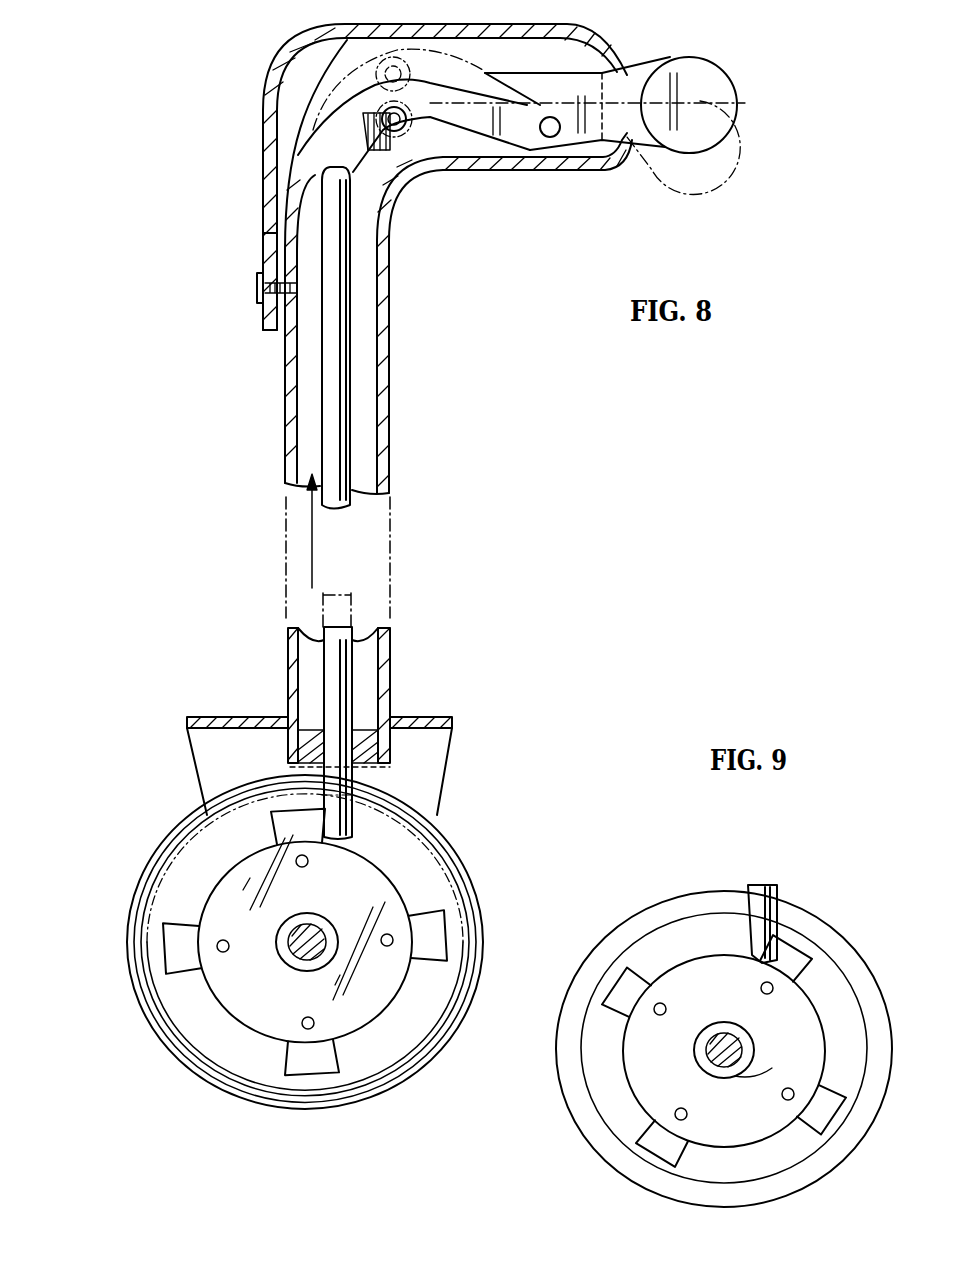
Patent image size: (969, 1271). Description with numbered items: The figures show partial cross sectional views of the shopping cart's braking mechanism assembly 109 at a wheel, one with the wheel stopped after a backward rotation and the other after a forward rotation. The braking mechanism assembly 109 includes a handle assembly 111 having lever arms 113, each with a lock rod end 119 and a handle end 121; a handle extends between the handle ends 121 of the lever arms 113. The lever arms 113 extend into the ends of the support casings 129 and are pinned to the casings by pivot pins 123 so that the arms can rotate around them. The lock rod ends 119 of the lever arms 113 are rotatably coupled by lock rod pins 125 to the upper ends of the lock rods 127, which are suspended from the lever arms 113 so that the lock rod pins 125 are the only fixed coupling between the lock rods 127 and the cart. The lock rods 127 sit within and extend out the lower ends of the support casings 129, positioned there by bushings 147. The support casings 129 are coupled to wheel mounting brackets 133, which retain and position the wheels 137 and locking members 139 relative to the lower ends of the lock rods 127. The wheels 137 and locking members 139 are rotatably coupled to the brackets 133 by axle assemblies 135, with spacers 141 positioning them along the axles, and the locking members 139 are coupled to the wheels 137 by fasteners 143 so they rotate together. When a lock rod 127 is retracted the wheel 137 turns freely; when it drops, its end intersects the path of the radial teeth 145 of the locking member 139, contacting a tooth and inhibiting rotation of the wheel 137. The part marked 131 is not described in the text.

In FIG. 8, the braking mechanism assembly 109 is at (185, 76).
In FIG. 8, the handle assembly 111 is at (775, 175).
In FIG. 8, the lever arms 113 is at (628, 133).
In FIG. 8, the lock rod end 119 is at (370, 115).
In FIG. 8, the handle end 121 is at (692, 57).
In FIG. 8, the pivot pins 123 is at (550, 137).
In FIG. 8, the lock rod pins 125 is at (400, 131).
In FIG. 8, the lock rods 127 is at (352, 679).
In FIG. 9, the lock rods 127 is at (747, 903).
In FIG. 8, the support casings 129 is at (387, 410).
In FIG. 8, the housing 131 is at (266, 62).
In FIG. 8, the wheel mounting brackets 133 is at (433, 717).
In FIG. 8, the axle assemblies 135 is at (313, 927).
In FIG. 9, the axle assemblies 135 is at (763, 1020).
In FIG. 8, the wheels 137 is at (457, 842).
In FIG. 9, the wheels 137 is at (870, 963).
In FIG. 8, the locking members 139 is at (413, 968).
In FIG. 8, the spacers 141 is at (337, 960).
In FIG. 9, the spacers 141 is at (768, 1063).
In FIG. 8, the fasteners 143 is at (295, 861).
In FIG. 9, the fasteners 143 is at (693, 993).
In FIG. 8, the radial teeth 145 is at (287, 813).
In FIG. 9, the radial teeth 145 is at (800, 958).
In FIG. 8, the bushings 147 is at (398, 748).